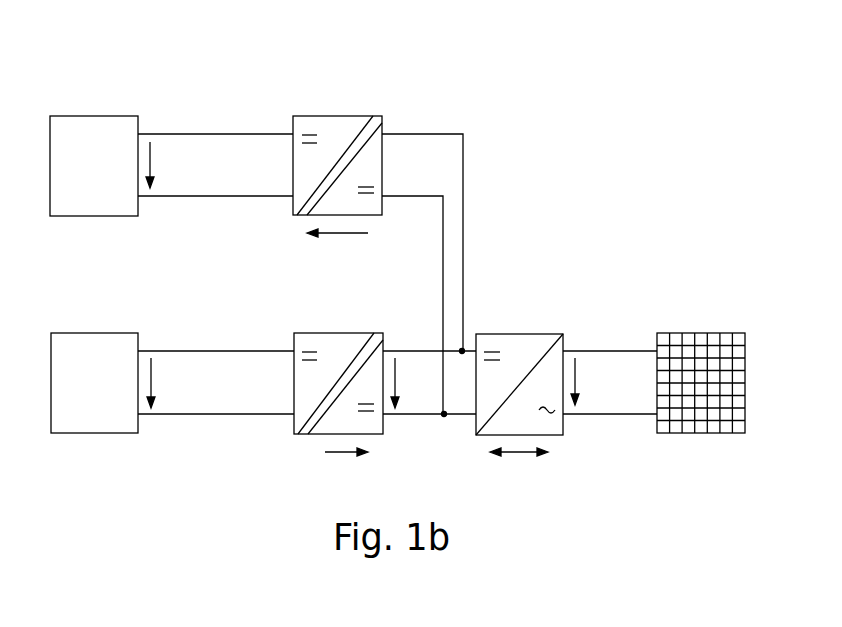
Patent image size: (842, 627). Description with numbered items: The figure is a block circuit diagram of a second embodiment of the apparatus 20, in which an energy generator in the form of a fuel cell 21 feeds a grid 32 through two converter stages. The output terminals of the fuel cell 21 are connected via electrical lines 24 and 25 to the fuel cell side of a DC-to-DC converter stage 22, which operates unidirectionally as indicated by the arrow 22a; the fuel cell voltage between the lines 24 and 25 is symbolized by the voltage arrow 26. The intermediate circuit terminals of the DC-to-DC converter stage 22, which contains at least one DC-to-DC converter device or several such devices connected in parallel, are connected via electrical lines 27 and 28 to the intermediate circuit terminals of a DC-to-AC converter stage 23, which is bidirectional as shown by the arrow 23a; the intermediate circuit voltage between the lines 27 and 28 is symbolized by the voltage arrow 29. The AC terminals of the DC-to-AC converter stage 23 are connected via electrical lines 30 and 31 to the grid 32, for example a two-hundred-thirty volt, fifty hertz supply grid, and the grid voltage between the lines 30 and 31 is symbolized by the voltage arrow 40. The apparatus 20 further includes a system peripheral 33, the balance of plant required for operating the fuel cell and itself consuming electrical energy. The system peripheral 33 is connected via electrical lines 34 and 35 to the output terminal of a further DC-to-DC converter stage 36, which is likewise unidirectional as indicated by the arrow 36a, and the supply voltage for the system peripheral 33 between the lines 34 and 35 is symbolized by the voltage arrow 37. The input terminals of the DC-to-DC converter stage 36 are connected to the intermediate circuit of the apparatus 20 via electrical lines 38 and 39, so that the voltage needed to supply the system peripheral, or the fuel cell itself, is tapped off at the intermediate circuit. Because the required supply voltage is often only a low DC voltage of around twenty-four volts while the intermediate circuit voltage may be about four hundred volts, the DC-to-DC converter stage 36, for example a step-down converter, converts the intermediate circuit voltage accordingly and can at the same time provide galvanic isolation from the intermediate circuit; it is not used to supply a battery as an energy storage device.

The apparatus 20 is at (227, 473).
The fuel cell 21 is at (72, 434).
The DC-to-DC converter stage 22 is at (375, 436).
The arrow 22a is at (345, 455).
The DC-to-AC converter stage 23 is at (563, 434).
The arrow 23a is at (522, 455).
The electrical line 24 is at (218, 350).
The electrical line 25 is at (210, 415).
The voltage arrow 26 is at (152, 382).
The electrical line 27 is at (426, 350).
The electrical line 28 is at (422, 415).
The voltage arrow 29 is at (395, 348).
The electrical line 30 is at (633, 348).
The electrical line 31 is at (633, 415).
The grid 32 is at (707, 433).
The system peripheral (BoP) 33 is at (86, 115).
The electrical line 34 is at (216, 133).
The electrical line 35 is at (198, 197).
The DC-to-DC converter stage 36 is at (337, 115).
The arrow 36a is at (340, 237).
The voltage arrow 37 is at (152, 163).
The electrical line 38 is at (463, 154).
The electrical line 39 is at (442, 217).
The voltage arrow 40 is at (577, 375).